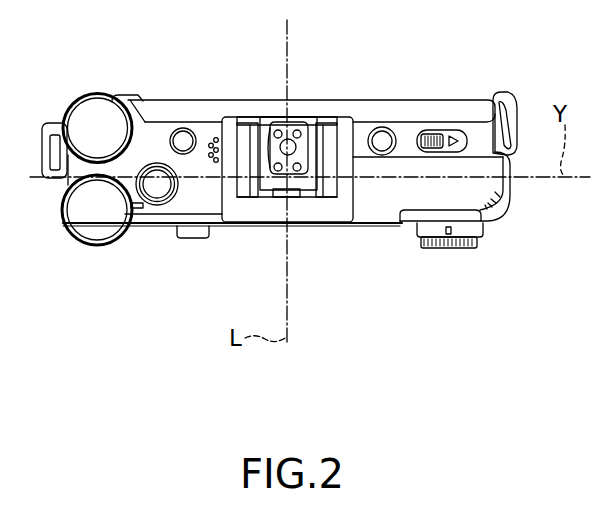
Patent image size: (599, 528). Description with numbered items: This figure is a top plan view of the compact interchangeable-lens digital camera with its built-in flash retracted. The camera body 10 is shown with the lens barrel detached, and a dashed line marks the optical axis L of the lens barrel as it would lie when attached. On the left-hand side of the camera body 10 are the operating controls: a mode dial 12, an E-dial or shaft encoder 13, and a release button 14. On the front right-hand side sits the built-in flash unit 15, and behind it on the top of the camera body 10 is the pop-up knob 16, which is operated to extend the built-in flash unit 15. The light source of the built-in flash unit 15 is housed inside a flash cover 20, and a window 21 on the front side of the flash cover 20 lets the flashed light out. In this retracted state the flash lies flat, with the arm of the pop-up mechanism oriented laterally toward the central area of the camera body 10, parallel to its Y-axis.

The camera body 10 is at (332, 306).
The mode dial 12 is at (81, 242).
The E-dial or shaft encoder 13 is at (91, 118).
The release button 14 is at (163, 190).
The built-in flash unit 15 is at (475, 190).
The pop-up knob 16 is at (432, 130).
The flash cover 20 is at (382, 207).
The window 21 is at (412, 216).